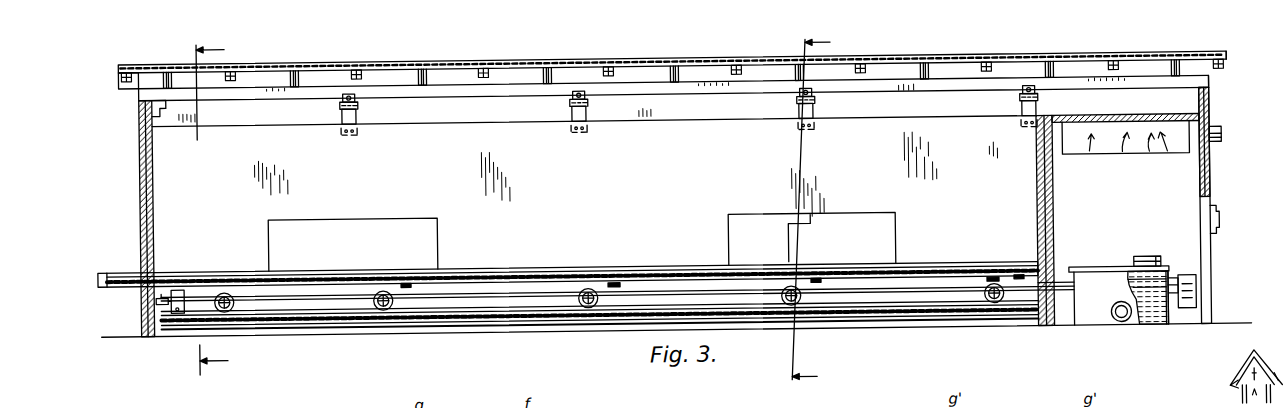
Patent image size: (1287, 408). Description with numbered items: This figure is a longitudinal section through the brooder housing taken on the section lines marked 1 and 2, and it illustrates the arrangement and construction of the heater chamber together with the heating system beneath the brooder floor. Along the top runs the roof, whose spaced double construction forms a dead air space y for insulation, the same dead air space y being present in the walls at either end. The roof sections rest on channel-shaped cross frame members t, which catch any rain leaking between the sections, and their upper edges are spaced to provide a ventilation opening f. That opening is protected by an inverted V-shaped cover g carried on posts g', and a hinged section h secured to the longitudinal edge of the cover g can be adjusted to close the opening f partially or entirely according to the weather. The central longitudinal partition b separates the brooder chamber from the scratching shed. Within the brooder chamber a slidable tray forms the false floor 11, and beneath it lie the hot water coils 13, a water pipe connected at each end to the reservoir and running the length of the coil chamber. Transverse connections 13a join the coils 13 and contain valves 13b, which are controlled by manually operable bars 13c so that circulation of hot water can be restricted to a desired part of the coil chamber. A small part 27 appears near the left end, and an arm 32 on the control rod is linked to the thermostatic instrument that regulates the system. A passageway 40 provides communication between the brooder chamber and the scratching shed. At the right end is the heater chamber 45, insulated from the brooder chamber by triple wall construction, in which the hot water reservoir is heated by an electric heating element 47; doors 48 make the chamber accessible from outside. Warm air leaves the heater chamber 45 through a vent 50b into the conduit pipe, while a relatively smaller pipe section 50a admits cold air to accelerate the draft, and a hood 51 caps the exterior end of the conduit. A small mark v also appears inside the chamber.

The section line 1- 1 is at (819, 210).
The section line 2- 2 is at (226, 207).
The hinged section h is at (127, 80).
The inverted V-shaped cover g is at (672, 56).
The post g' is at (671, 60).
The central longitudinal partition b is at (458, 132).
The ventilation opening f is at (523, 80).
The cross frame member t is at (358, 104).
The dead air space y is at (143, 184).
The interior v is at (998, 161).
The false floor 11 is at (118, 265).
The hot water coils 13 is at (536, 295).
The transverse connections 13a is at (575, 292).
The valves 13b is at (598, 300).
The manually operable bars 13c is at (408, 278).
The bracket 27 is at (155, 298).
The arm 32 is at (165, 284).
The passageway 40 is at (582, 241).
The heater chamber 45 is at (1132, 264).
The electric heating element 47 is at (1135, 290).
The doors 48 is at (1208, 254).
The pipe section 50a is at (1224, 139).
The vent 50b is at (1176, 142).
The hood 51 is at (1247, 370).